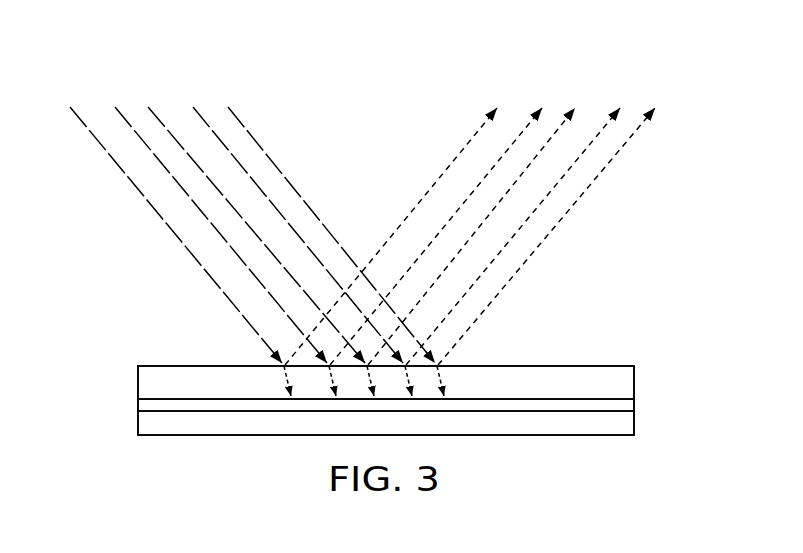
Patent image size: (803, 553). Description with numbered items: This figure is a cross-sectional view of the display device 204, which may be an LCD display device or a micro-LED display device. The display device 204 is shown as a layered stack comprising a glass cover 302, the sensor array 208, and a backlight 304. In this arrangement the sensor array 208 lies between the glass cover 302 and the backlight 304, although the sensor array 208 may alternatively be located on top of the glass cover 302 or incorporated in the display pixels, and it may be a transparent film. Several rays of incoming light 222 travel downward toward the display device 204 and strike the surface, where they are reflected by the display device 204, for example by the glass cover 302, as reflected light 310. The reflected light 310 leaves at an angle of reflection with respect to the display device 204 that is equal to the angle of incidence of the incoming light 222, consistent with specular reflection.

The incoming light 222 is at (112, 71).
The reflected light 310 is at (600, 71).
The display device 204 is at (150, 319).
The cover 302 is at (146, 384).
The sensor array 208 is at (626, 406).
The backlight 304 is at (146, 420).